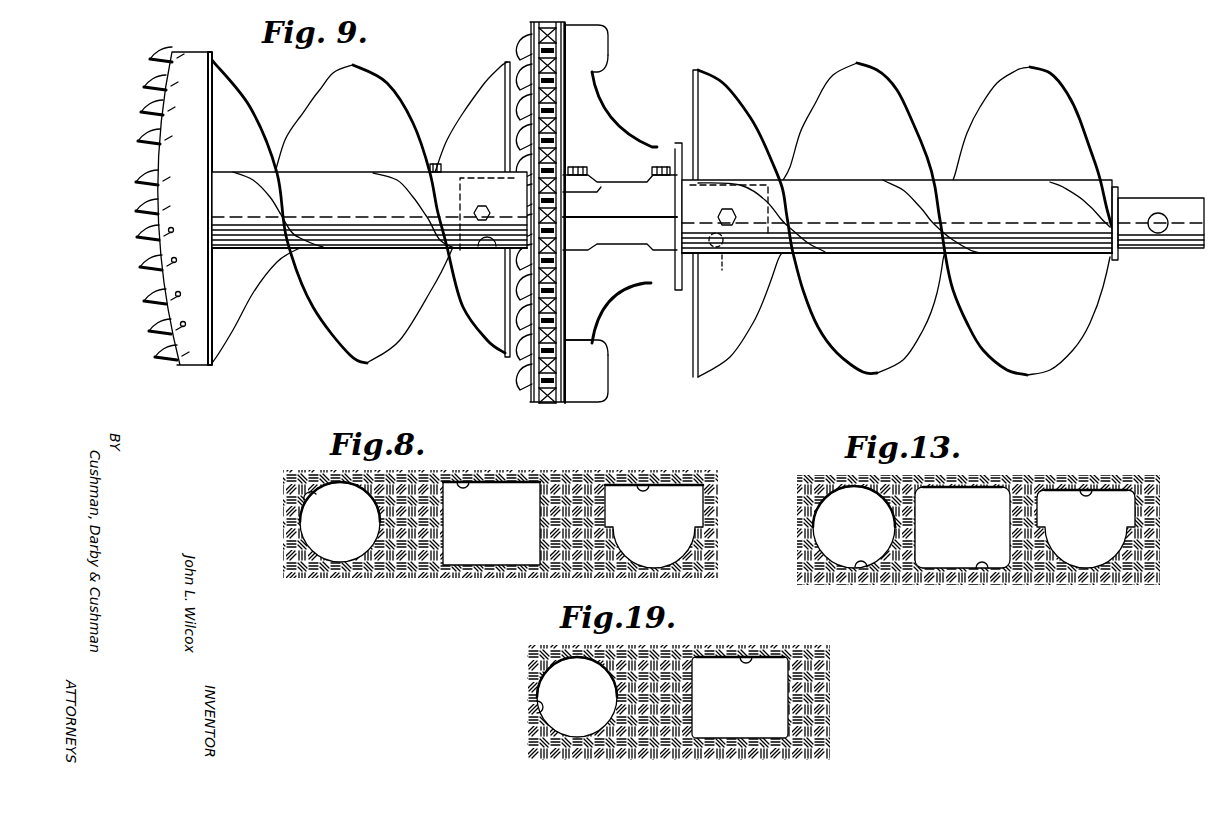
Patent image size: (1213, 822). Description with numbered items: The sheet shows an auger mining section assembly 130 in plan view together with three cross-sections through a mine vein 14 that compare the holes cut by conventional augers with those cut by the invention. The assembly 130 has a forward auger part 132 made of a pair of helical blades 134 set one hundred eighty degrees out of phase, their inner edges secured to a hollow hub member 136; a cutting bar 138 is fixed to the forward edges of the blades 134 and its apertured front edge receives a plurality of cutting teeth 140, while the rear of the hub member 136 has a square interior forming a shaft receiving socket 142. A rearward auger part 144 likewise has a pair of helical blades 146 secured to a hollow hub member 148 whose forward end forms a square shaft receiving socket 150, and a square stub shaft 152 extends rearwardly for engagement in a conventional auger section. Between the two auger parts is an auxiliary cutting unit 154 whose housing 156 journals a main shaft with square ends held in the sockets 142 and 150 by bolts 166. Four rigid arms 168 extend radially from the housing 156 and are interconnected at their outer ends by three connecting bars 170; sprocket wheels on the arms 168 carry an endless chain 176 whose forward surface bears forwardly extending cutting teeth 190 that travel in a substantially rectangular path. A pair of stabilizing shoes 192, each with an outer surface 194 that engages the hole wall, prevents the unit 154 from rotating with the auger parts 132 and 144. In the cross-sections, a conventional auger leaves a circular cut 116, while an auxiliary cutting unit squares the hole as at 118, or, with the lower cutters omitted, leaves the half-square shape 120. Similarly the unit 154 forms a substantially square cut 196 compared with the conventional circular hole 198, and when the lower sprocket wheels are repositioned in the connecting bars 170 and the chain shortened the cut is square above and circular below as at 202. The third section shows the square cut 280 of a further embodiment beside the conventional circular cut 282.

In FIG. 8, the mine vein 14 is at (568, 492).
In FIG. 13, the mine vein 14 is at (1025, 487).
In FIG. 19, the mine vein 14 is at (680, 654).
In FIG. 8, the cut of circular cross-section 116 is at (305, 498).
In FIG. 8, the squared hole 118 is at (460, 488).
In FIG. 8, the cut with square upper half 120 is at (647, 482).
In FIG. 9, the auger mining section assembly 130 is at (607, 220).
In FIG. 9, the forward auger part 132 is at (369, 211).
In FIG. 9, the helical blades 134 is at (310, 98).
In FIG. 9, the hollow hub member 136 is at (296, 242).
In FIG. 9, the cutting bar 138 is at (146, 206).
In FIG. 9, the cutting teeth 140 is at (150, 140).
In FIG. 9, the shaft receiving socket 142 is at (496, 250).
In FIG. 9, the rearward auger part 144 is at (943, 219).
In FIG. 9, the helical blades 146 is at (823, 102).
In FIG. 9, the hollow hub member 148 is at (872, 240).
In FIG. 9, the shaft receiving socket 150 is at (723, 272).
In FIG. 9, the stub shaft 152 is at (1148, 208).
In FIG. 9, the auxiliary cutting unit 154 is at (642, 329).
In FIG. 9, the housing 156 is at (622, 220).
In FIG. 9, the bolts 166 is at (484, 204).
In FIG. 9, the rigid arms 168 is at (588, 110).
In FIG. 9, the connecting bars 170 is at (566, 95).
In FIG. 9, the endless chain 176 is at (564, 211).
In FIG. 9, the cutting teeth 190 is at (517, 146).
In FIG. 9, the stabilizing shoes 192 is at (609, 62).
In FIG. 9, the outer surface 194 is at (594, 36).
In FIG. 13, the substantially square cut 196 is at (982, 570).
In FIG. 13, the circular cross-sectional hole 198 is at (862, 570).
In FIG. 13, the cut with square upper half and circular lower half 202 is at (1096, 484).
In FIG. 19, the substantially square cut 280 is at (752, 660).
In FIG. 19, the conventional circular cut 282 is at (537, 705).